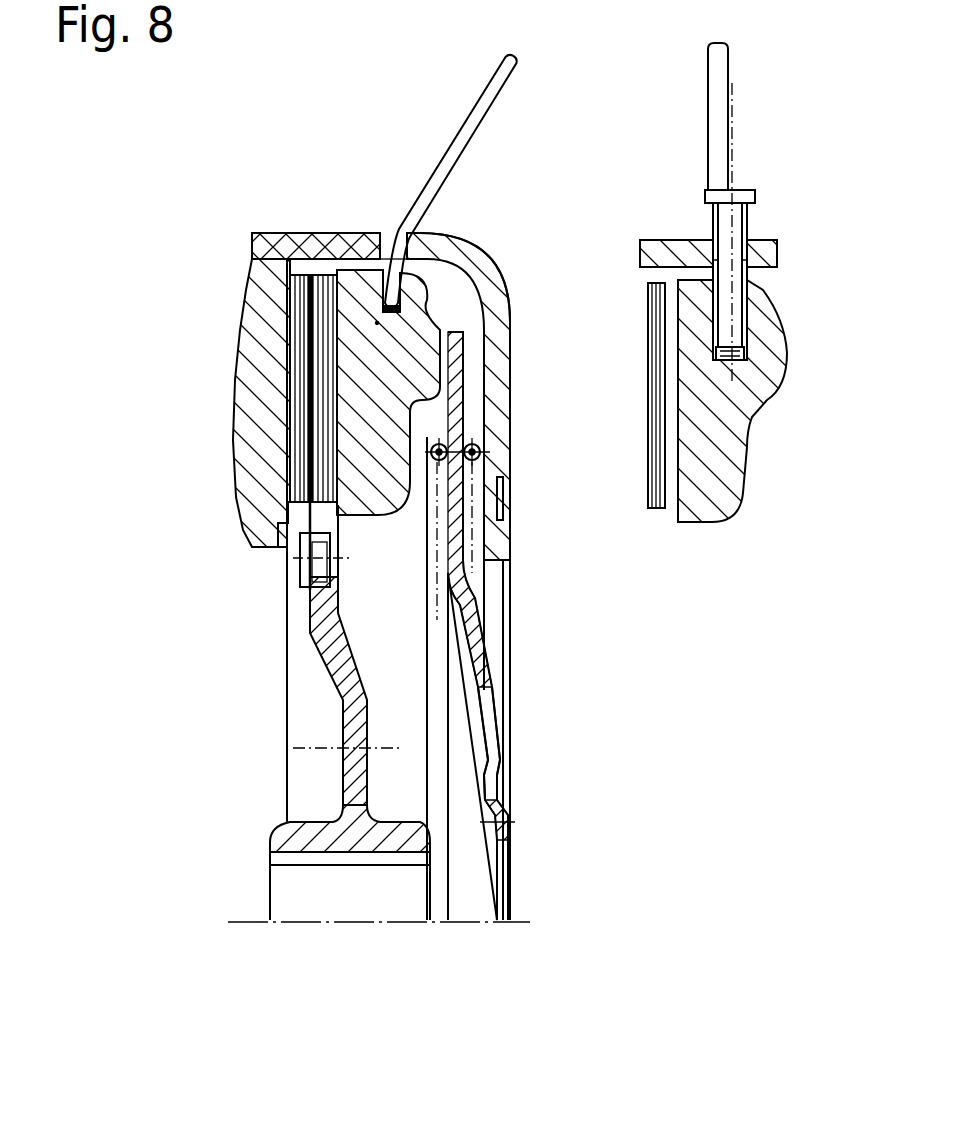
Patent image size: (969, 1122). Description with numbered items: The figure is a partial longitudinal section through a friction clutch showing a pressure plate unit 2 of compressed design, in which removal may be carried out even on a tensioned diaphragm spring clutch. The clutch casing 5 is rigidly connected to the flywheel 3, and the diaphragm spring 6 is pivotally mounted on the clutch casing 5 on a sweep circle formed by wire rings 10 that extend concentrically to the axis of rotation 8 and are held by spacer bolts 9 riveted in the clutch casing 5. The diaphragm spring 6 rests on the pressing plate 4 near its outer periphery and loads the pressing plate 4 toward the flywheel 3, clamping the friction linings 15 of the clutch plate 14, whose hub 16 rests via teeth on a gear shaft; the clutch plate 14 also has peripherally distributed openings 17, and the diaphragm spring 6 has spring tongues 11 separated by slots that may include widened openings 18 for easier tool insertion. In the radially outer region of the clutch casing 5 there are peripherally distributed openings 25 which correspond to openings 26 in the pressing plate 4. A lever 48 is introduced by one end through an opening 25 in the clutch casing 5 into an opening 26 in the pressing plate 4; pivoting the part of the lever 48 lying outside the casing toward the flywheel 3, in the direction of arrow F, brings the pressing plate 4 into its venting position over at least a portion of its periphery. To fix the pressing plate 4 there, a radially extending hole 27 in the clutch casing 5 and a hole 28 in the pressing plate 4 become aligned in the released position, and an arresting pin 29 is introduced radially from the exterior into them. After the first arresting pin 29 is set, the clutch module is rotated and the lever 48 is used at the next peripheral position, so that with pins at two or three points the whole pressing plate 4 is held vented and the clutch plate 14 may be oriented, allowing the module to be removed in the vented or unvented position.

The pressure plate unit 2 is at (514, 242).
The flywheel 3 is at (253, 335).
The pressing plate 4 is at (353, 287).
The clutch casing 5 is at (500, 328).
The diaphragm spring 6 is at (457, 423).
The axis of rotation 8 is at (262, 922).
The spacer bolts 9 is at (503, 508).
The wire rings 10 is at (472, 440).
The spring tongues 11 is at (480, 647).
The clutch plate 14 is at (317, 615).
The friction linings 15 is at (290, 262).
The hub 16 is at (297, 833).
The openings 17 is at (330, 717).
The openings 18 is at (490, 760).
The openings 25 is at (397, 224).
The openings 26 is at (377, 323).
The hole 27 is at (748, 234).
The hole 28 is at (730, 383).
The arresting pin 29 is at (745, 193).
The lever 48 is at (467, 140).
The arrow F is at (477, 101).